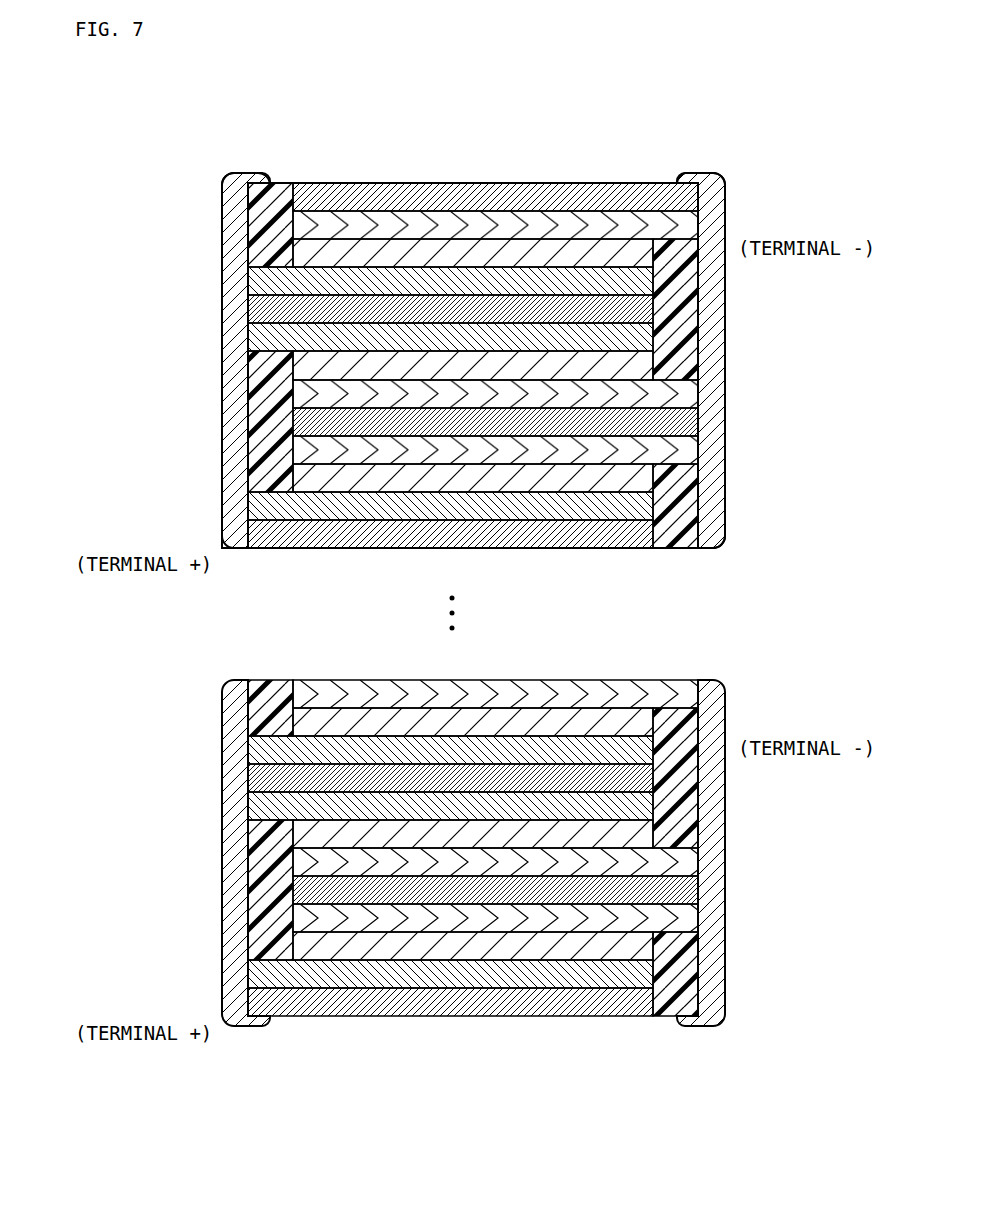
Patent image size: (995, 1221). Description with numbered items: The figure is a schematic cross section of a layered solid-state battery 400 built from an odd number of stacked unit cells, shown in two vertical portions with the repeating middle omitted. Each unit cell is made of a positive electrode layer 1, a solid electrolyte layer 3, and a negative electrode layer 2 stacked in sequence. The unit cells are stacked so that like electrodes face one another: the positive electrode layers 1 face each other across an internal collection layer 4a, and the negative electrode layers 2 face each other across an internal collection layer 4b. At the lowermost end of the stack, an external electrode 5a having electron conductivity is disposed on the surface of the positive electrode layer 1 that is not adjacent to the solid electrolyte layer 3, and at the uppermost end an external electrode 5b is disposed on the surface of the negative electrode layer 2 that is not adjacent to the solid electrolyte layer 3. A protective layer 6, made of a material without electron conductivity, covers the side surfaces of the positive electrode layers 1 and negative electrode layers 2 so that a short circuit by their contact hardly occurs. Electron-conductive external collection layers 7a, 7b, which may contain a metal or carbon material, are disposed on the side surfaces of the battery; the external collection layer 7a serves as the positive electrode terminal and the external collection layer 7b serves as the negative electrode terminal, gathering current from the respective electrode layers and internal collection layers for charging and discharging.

The positive electrode layer 1 is at (263, 283).
The negative electrode layer 2 is at (308, 229).
The solid electrolyte layer 3 is at (305, 257).
The internal collection layer 4a is at (270, 312).
The internal collection layer 4b is at (302, 422).
The external electrode 5a is at (327, 1002).
The external electrode 5b is at (308, 184).
The protective layer 6 is at (265, 201).
The external collection layer 7a is at (233, 532).
The external collection layer 7b is at (712, 228).
The layered solid-state battery 400 is at (560, 159).